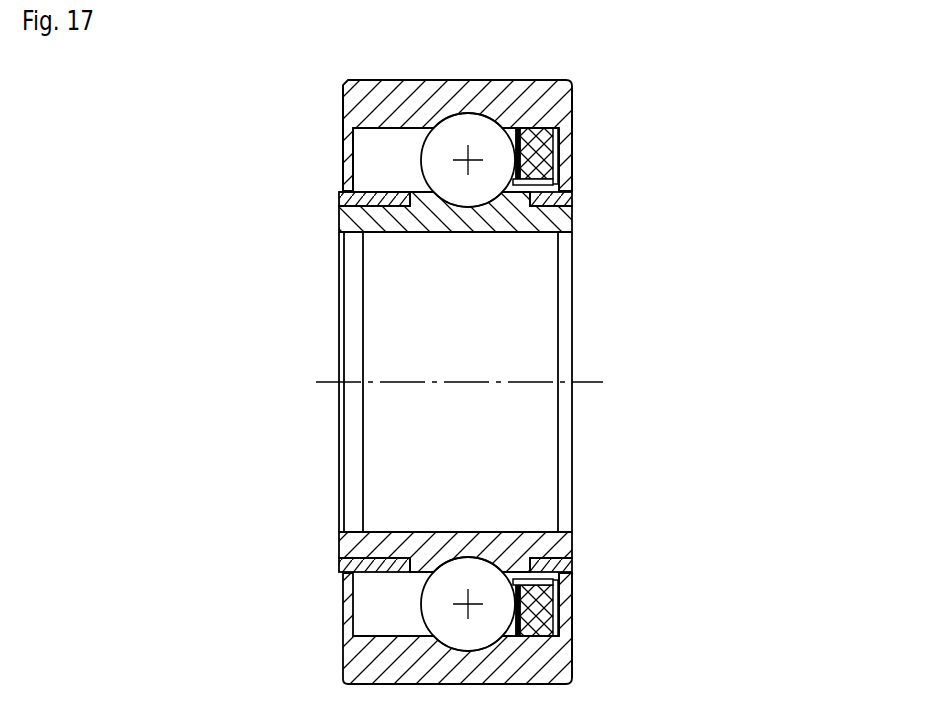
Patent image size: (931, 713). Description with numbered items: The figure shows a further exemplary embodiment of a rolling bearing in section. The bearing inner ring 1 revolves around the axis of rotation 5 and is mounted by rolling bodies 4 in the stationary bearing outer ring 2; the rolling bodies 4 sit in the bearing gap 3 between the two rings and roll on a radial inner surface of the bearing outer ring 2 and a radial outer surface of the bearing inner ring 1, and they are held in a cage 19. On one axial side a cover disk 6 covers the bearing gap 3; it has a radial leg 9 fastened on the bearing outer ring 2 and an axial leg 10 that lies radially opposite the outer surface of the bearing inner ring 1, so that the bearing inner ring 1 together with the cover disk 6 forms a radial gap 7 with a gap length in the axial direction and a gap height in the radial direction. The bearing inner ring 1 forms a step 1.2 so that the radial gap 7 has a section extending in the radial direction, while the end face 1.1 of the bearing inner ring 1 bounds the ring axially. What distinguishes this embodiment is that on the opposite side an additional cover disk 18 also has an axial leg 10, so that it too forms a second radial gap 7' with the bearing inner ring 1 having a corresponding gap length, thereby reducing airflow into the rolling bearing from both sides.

The bearing inner ring 1 is at (543, 212).
The end face 1.1 is at (343, 535).
The step 1.2 is at (430, 210).
The bearing outer ring 2 is at (543, 120).
The bearing gap 3 is at (378, 152).
The rolling bodies 4 is at (473, 190).
The axis of rotation 5 is at (603, 382).
The cover disk 6 is at (352, 150).
The radial gap 7 is at (272, 382).
The second radial gap 7' is at (645, 382).
The radial leg 9 is at (352, 122).
The axial leg 10 is at (385, 200).
The additional cover disk 18 is at (573, 92).
The cage 19 is at (543, 605).